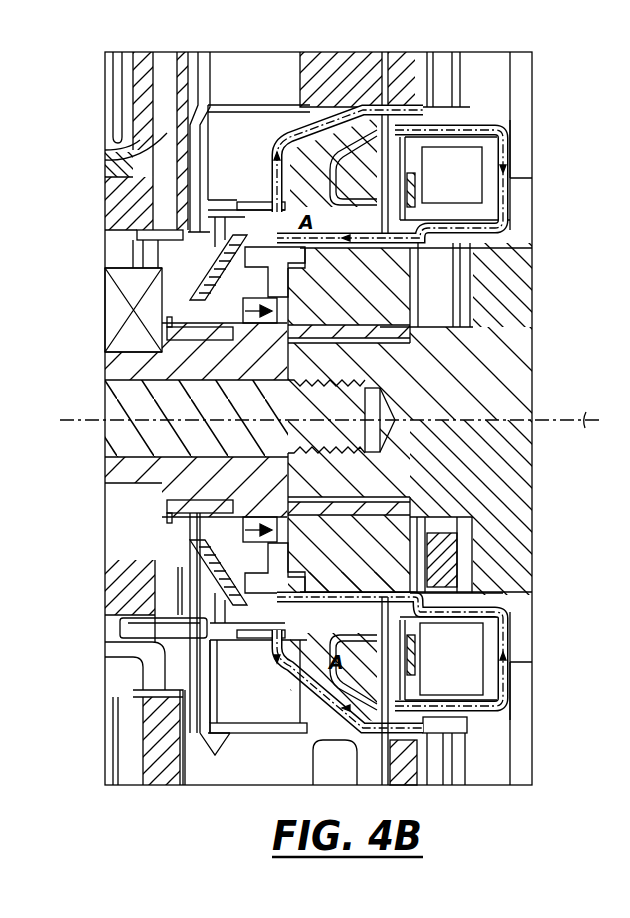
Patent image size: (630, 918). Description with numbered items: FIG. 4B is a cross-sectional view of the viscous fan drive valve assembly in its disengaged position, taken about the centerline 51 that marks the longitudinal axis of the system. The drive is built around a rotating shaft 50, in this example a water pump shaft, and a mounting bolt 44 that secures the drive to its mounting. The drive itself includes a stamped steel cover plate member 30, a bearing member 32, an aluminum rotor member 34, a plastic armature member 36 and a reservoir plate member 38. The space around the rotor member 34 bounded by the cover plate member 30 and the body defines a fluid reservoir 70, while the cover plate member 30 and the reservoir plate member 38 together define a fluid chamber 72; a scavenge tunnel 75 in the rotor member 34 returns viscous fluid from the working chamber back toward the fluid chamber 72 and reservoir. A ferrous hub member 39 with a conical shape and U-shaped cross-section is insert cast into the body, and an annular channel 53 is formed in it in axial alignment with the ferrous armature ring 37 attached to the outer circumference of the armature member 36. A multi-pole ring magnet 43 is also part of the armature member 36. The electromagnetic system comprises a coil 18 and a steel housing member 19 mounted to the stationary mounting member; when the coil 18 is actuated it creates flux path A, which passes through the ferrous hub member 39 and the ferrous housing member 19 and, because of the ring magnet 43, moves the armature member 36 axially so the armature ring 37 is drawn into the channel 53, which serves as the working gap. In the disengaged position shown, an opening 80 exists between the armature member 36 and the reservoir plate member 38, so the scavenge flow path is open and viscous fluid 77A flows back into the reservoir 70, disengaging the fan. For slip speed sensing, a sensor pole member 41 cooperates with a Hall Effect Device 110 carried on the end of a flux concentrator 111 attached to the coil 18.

The coil 18 is at (465, 158).
The steel housing member 19 is at (450, 112).
The cover plate member 30 is at (130, 84).
The bearing member 32 is at (112, 322).
The rotor member 34 is at (143, 58).
The armature member 36 is at (205, 300).
The armature ring 37 is at (272, 202).
The reservoir plate member 38 is at (205, 785).
The hub member 39 is at (332, 100).
The sensor pole member 41 is at (245, 312).
The multi-pole ring magnet 43 is at (266, 323).
The mounting bolt 44 is at (118, 438).
The rotating shaft 50 is at (518, 352).
The centerline 51 is at (331, 440).
The annular channel 53 is at (328, 195).
The fluid reservoir 70 is at (232, 785).
The fluid chamber 72 is at (196, 580).
The scavenge tunnel 75 is at (130, 162).
The viscous fluid 77A is at (215, 690).
The opening 80 is at (205, 630).
The Hall Effect Device 110 is at (440, 520).
The flux concentrator 111 is at (450, 565).